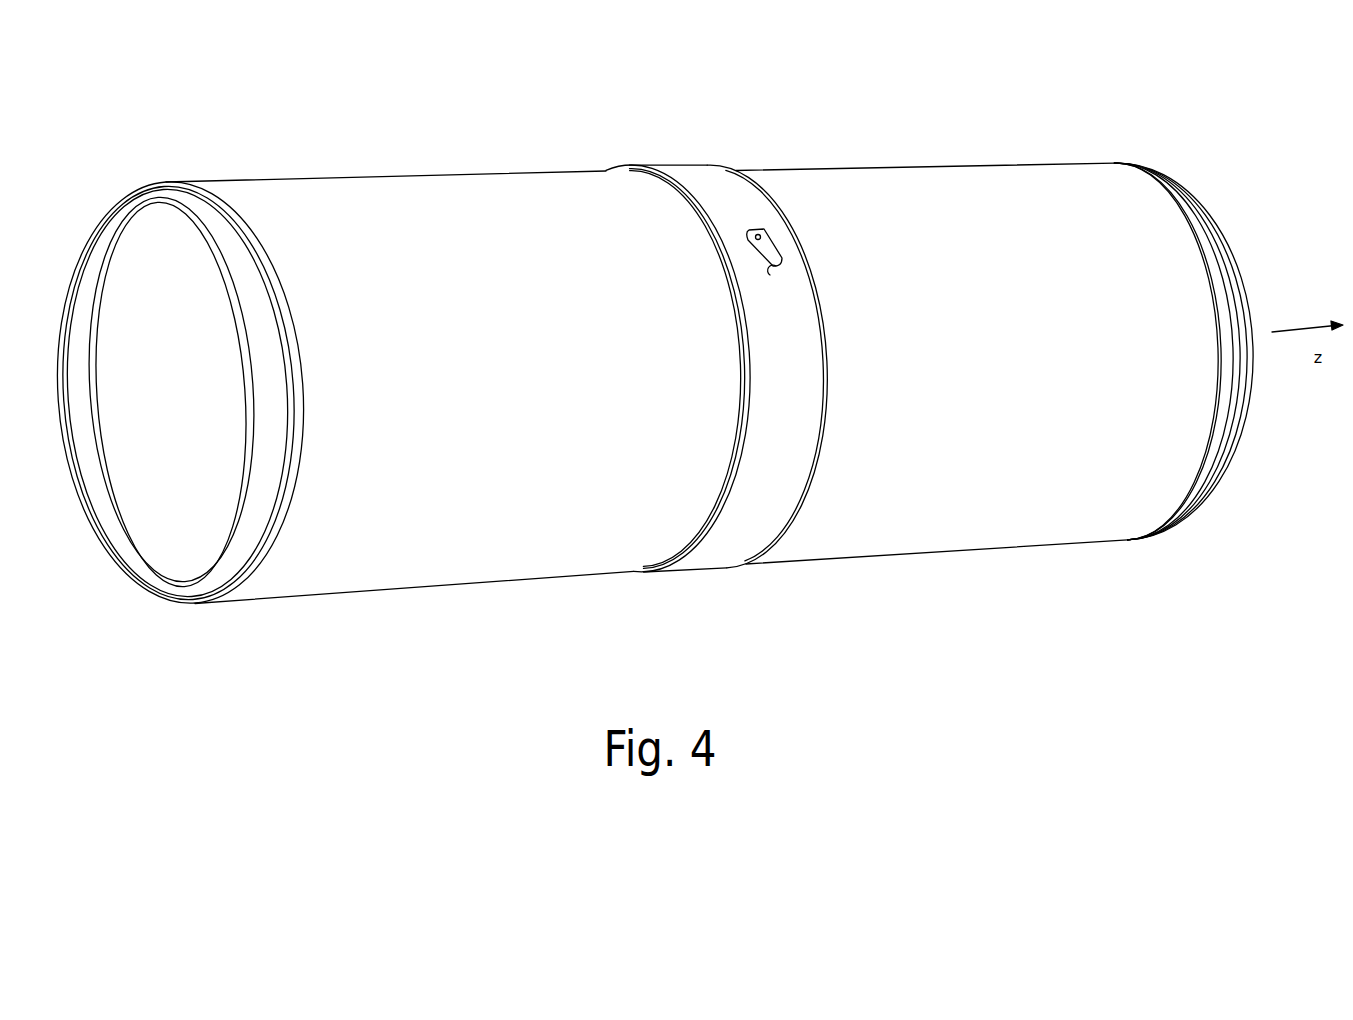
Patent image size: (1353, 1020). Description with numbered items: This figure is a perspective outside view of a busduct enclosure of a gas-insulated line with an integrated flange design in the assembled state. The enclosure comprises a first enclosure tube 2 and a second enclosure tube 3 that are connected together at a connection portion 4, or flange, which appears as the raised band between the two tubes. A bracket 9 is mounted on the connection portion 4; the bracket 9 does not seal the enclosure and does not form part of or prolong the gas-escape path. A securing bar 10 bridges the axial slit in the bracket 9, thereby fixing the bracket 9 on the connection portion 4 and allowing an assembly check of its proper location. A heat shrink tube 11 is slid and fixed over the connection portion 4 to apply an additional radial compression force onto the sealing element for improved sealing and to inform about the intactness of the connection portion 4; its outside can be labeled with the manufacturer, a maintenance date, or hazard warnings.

The first enclosure tube 2 is at (400, 247).
The second enclosure tube 3 is at (882, 242).
The connection portion 4 is at (748, 388).
The bracket 9 is at (683, 163).
The securing bar 10 is at (752, 253).
The heat shrink tube 11 is at (810, 392).